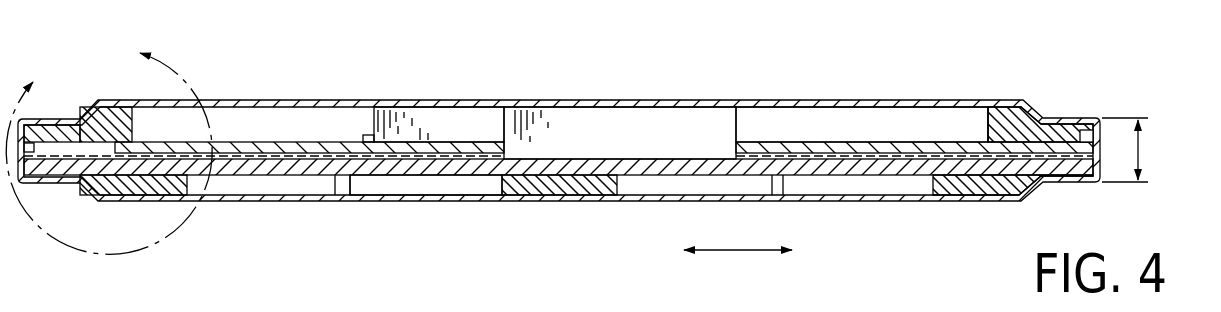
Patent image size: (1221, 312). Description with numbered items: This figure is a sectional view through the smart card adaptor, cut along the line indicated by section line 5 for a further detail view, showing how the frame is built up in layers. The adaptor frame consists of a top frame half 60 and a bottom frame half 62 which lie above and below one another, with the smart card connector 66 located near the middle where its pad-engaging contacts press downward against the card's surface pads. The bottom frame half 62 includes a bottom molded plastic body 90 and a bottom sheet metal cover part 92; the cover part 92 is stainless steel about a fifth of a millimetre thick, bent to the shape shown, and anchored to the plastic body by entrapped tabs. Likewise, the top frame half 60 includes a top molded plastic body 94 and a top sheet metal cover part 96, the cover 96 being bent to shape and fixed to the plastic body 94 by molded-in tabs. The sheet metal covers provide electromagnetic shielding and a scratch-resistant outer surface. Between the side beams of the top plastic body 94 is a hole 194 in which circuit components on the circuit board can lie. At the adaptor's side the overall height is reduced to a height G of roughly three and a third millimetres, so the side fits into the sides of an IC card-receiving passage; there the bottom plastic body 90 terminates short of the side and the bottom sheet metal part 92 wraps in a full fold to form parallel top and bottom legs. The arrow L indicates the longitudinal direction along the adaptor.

The section line 5- 5 is at (109, 129).
The top frame half 60 is at (430, 100).
The bottom frame half 62 is at (399, 206).
The smart card connector 66 is at (653, 110).
The bottom molded plastic body 90 is at (546, 200).
The bottom sheet metal cover part 92 is at (472, 200).
The top molded plastic body 94 is at (1013, 112).
The top sheet metal cover part 96 is at (804, 101).
The hole 194 is at (985, 118).
The reduced height G is at (1140, 146).
The longitudinal direction L is at (745, 251).